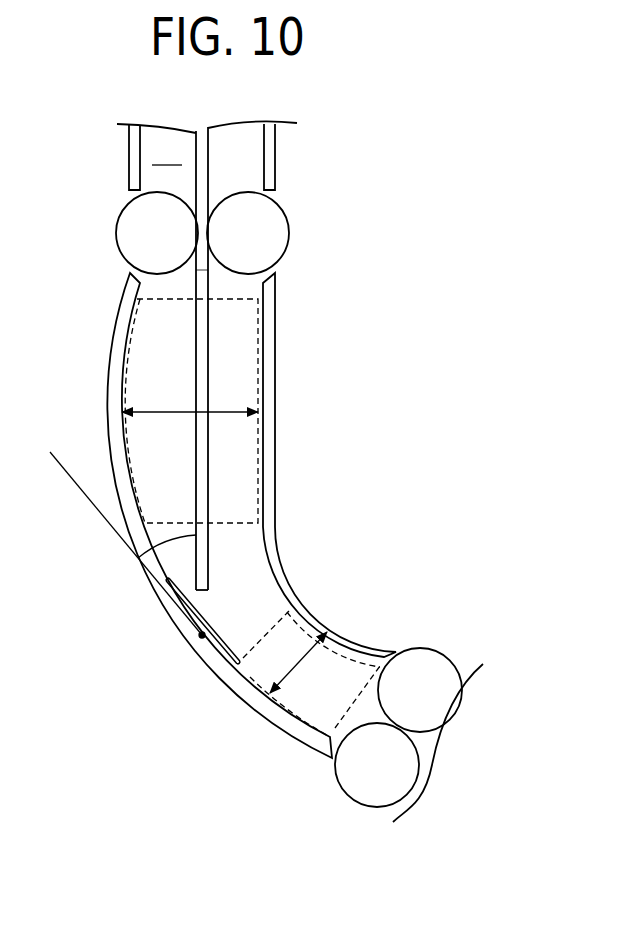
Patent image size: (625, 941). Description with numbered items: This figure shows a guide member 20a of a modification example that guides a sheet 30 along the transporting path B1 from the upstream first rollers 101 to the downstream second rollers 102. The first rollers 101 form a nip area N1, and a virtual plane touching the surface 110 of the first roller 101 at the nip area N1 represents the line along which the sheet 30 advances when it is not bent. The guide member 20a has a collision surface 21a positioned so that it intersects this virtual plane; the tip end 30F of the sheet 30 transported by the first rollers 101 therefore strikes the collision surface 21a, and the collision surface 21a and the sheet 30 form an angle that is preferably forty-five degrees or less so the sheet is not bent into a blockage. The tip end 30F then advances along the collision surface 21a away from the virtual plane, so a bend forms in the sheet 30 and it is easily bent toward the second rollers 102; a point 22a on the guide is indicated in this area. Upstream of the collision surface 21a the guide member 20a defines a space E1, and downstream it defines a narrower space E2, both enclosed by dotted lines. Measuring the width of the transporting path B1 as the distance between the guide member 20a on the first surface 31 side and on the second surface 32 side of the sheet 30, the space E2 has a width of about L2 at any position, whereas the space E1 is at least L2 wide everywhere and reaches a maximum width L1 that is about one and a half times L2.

The sheet 30 is at (205, 346).
The first surface 31 is at (208, 471).
The second surface 32 is at (195, 471).
The tip end 30F is at (240, 582).
The guide member 20a is at (128, 160).
The transporting path B1 is at (167, 153).
The surface of the first roller 110 is at (120, 218).
The first rollers 101 is at (203, 241).
The nip area N1 is at (193, 272).
The maximum width of space E1 L1 is at (190, 396).
The space (upstream) E1 is at (227, 457).
The collision surface 21a is at (238, 660).
The contact point on guide 22a is at (202, 640).
The space (downstream) E2 is at (320, 712).
The width of space E2 L2 is at (299, 662).
The second rollers 102 is at (433, 638).